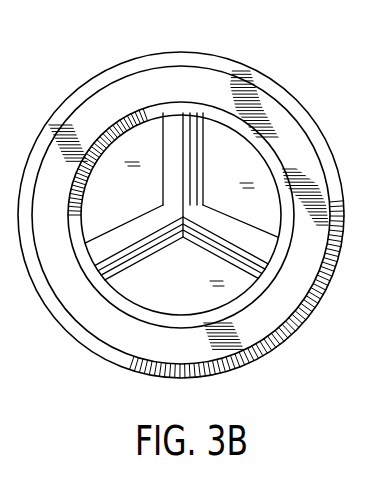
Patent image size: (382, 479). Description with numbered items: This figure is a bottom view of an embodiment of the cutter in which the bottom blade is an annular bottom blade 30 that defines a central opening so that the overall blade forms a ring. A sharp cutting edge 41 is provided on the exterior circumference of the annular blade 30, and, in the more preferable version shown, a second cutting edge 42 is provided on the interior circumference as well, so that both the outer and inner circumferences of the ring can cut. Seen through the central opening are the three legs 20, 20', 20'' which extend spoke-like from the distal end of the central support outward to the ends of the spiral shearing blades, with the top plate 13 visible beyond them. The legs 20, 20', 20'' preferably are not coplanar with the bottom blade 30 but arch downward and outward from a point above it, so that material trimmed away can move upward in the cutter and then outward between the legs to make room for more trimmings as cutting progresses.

The top plate 13 is at (188, 295).
The leg 20 is at (274, 262).
The leg 20' is at (97, 271).
The leg 20'' is at (182, 114).
The annular bottom blade 30 is at (112, 103).
The exterior cutting edge 41 is at (310, 122).
The interior cutting edge 42 is at (245, 130).